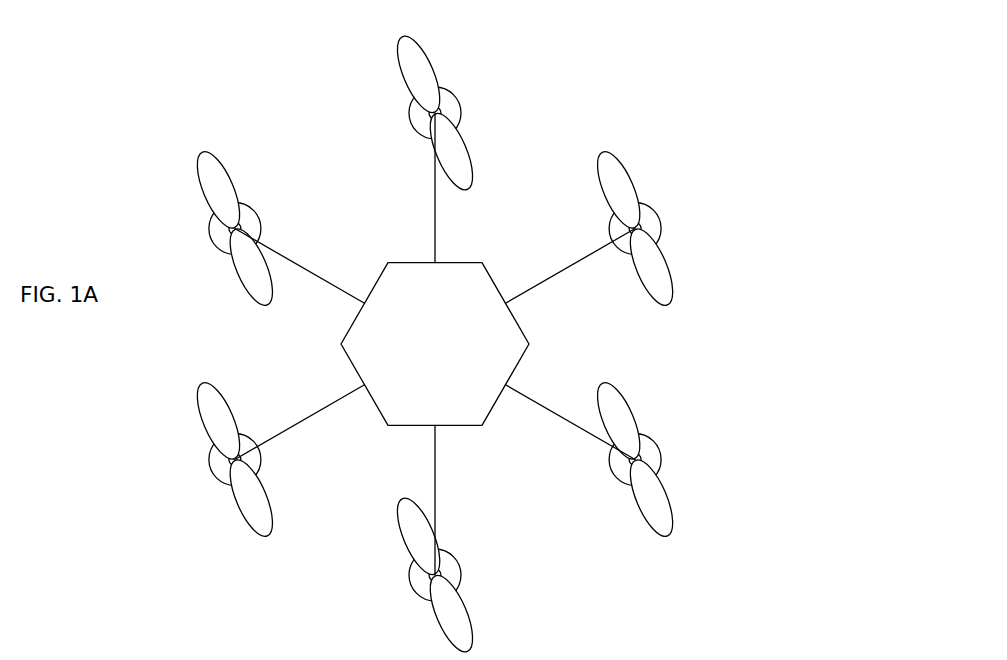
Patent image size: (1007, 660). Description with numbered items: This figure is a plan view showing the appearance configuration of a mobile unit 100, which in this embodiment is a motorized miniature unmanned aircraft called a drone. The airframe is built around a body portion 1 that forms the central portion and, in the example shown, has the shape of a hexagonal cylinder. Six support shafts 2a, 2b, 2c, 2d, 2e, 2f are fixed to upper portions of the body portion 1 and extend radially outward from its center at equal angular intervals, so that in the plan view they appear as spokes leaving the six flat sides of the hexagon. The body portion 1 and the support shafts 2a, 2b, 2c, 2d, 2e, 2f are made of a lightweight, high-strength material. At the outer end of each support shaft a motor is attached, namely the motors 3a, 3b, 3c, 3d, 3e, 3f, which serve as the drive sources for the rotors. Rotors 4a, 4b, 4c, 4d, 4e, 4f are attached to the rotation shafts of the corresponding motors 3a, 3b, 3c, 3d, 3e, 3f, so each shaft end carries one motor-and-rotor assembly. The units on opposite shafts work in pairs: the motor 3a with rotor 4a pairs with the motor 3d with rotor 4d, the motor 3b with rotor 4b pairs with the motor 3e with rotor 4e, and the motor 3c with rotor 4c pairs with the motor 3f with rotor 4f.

The mobile unit 100 is at (562, 86).
The body portion 1 is at (527, 367).
The support shaft 2a is at (541, 283).
The support shaft 2b is at (434, 197).
The support shaft 2c is at (292, 258).
The support shaft 2d is at (287, 427).
The support shaft 2e is at (434, 463).
The support shaft 2f is at (588, 438).
The motor 3a is at (612, 228).
The motor 3b is at (410, 110).
The motor 3c is at (208, 228).
The motor 3d is at (208, 460).
The motor 3e is at (410, 578).
The motor 3f is at (660, 455).
The rotor 4a is at (620, 160).
The rotor 4b is at (428, 38).
The rotor 4c is at (220, 158).
The rotor 4d is at (265, 508).
The rotor 4e is at (465, 635).
The rotor 4f is at (625, 392).